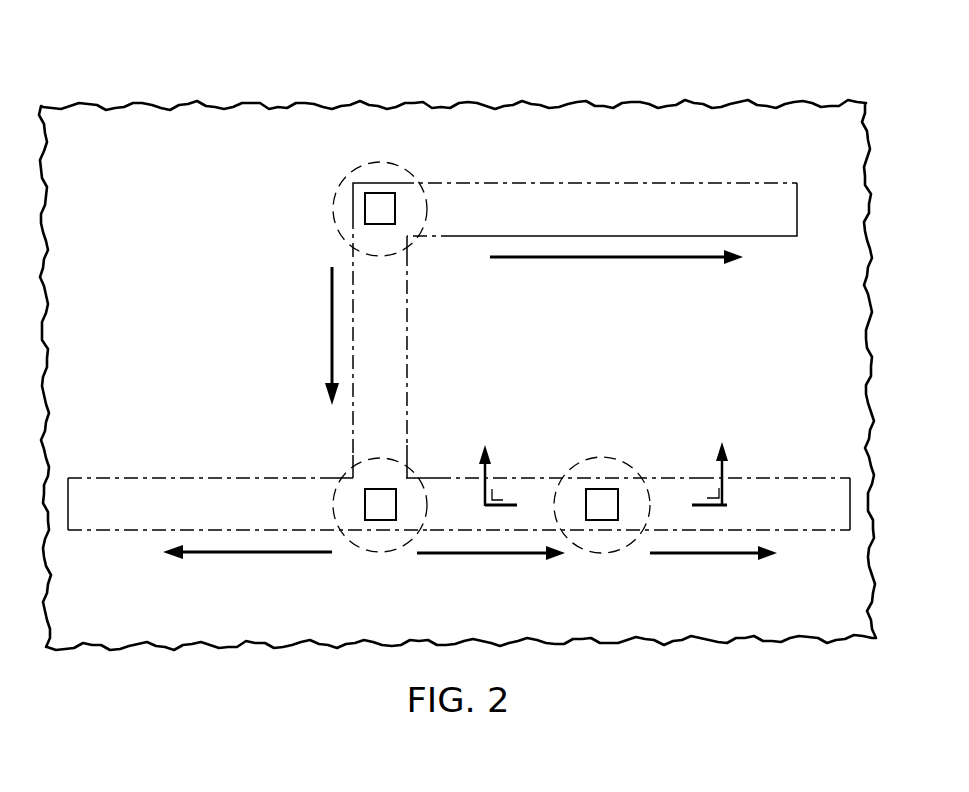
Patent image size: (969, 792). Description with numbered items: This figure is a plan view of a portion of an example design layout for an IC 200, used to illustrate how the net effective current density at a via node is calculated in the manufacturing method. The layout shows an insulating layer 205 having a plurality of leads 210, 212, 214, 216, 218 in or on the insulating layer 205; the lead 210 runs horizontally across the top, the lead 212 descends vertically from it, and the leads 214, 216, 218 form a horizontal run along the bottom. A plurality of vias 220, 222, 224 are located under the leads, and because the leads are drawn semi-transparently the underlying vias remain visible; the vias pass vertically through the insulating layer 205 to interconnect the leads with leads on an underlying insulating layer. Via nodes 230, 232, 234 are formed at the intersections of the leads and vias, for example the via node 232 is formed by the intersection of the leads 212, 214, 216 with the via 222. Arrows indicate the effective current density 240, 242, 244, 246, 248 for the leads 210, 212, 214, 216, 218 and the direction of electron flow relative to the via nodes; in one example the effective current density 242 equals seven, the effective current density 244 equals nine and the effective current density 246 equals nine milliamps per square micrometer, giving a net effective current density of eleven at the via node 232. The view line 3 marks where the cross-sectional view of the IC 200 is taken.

The IC 200 is at (172, 78).
The insulating layer 205 is at (588, 102).
The lead 210 is at (613, 165).
The lead 212 is at (436, 345).
The lead 214 is at (197, 458).
The lead 216 is at (537, 445).
The lead 218 is at (765, 445).
The via 220 is at (364, 207).
The via 222 is at (380, 521).
The via 224 is at (602, 521).
The via node 230 is at (396, 165).
The via node 232 is at (346, 470).
The via node 234 is at (620, 458).
The effective current density 240 is at (617, 258).
The effective current density 242 is at (331, 330).
The effective current density 244 is at (262, 555).
The effective current density 246 is at (500, 555).
The effective current density 248 is at (700, 555).
The view line 3 is at (603, 459).